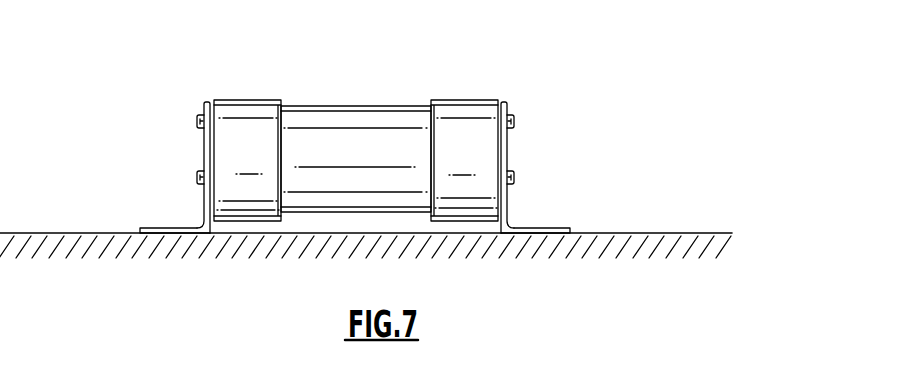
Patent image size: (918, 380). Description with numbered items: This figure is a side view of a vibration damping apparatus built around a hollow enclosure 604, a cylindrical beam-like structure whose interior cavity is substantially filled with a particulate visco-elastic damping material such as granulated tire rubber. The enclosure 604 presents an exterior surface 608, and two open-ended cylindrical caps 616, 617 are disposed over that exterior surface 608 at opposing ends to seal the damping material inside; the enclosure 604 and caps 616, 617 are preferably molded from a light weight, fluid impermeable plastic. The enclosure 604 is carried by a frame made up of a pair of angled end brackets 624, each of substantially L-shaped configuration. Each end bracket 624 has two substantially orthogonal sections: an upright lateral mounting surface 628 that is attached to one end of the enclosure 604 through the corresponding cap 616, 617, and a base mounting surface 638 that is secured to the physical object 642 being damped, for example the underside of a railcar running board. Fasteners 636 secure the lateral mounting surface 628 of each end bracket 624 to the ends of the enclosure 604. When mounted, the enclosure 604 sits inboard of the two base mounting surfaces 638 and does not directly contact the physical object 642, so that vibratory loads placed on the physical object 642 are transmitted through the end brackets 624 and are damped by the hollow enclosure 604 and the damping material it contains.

The hollow enclosure 604 is at (361, 130).
The exterior surface 608 is at (397, 106).
The cap 616 is at (235, 105).
The cap 617 is at (484, 105).
The angled end bracket 624 is at (357, 153).
The lateral mounting surface 628 is at (204, 200).
The fastener 636 is at (195, 148).
The base mounting surface 638 is at (148, 229).
The physical object 642 is at (728, 233).